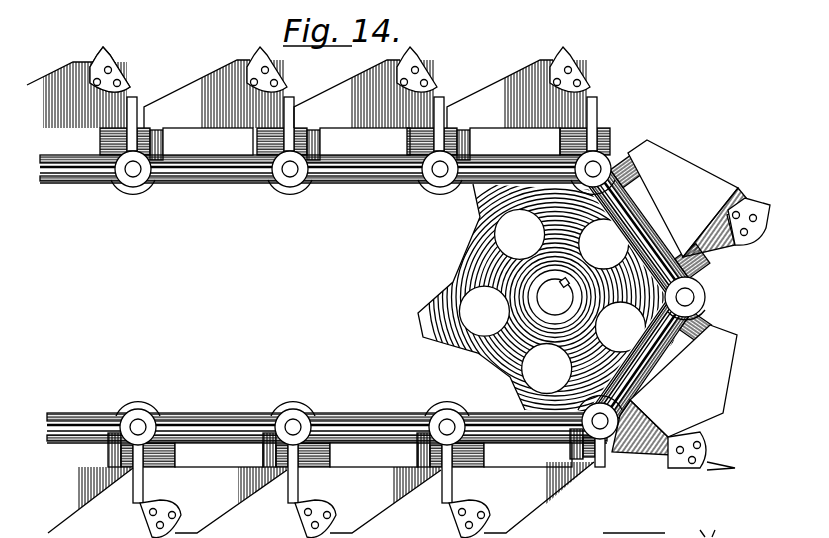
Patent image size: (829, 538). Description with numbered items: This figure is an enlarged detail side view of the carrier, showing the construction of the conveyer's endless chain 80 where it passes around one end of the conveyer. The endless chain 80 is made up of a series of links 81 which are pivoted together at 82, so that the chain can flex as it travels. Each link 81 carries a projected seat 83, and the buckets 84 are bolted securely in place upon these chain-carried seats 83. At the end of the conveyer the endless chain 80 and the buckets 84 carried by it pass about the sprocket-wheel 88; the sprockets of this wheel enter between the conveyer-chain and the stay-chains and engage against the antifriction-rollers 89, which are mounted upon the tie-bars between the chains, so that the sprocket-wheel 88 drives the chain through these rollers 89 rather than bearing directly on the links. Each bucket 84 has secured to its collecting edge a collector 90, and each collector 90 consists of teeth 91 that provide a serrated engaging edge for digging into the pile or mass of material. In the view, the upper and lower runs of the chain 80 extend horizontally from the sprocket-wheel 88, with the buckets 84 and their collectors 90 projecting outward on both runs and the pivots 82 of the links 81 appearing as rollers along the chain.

The endless chain 80 is at (98, 178).
The link 81 is at (252, 172).
The pivot 82 is at (289, 173).
The projected seat 83 is at (417, 142).
The bucket 84 is at (354, 110).
The sprocket-wheel 88 is at (497, 350).
The antifriction-roller 89 is at (435, 180).
The collector 90 is at (122, 78).
The tooth 91 is at (108, 50).